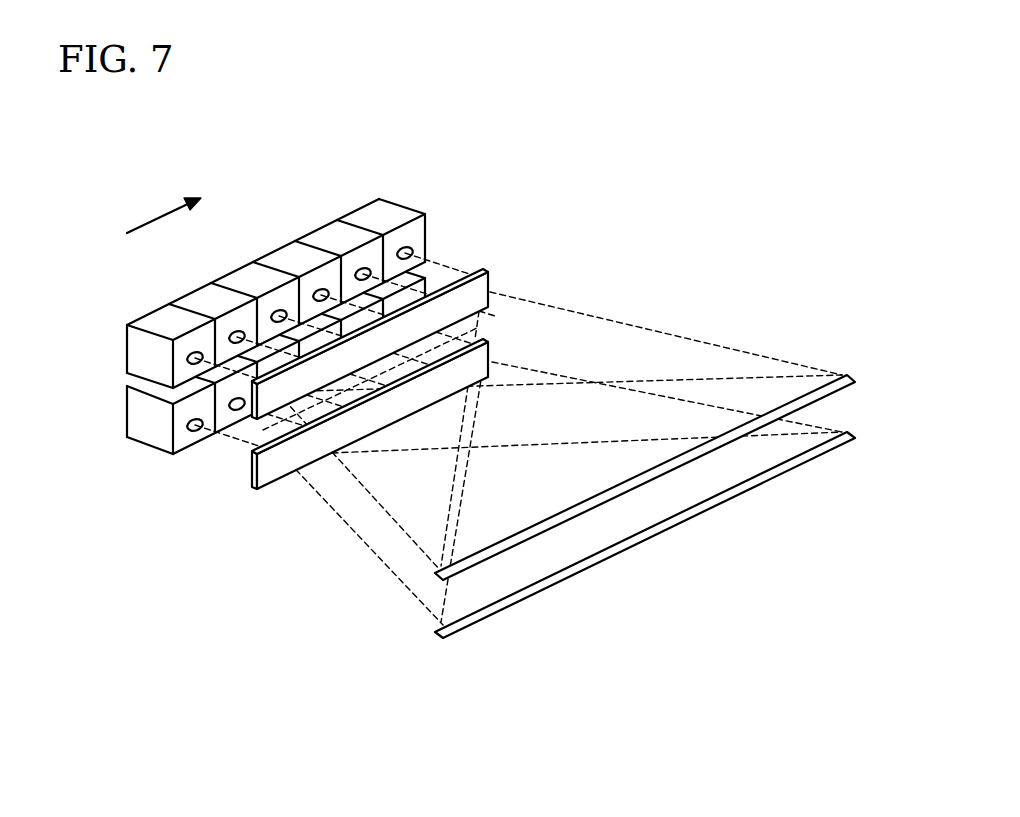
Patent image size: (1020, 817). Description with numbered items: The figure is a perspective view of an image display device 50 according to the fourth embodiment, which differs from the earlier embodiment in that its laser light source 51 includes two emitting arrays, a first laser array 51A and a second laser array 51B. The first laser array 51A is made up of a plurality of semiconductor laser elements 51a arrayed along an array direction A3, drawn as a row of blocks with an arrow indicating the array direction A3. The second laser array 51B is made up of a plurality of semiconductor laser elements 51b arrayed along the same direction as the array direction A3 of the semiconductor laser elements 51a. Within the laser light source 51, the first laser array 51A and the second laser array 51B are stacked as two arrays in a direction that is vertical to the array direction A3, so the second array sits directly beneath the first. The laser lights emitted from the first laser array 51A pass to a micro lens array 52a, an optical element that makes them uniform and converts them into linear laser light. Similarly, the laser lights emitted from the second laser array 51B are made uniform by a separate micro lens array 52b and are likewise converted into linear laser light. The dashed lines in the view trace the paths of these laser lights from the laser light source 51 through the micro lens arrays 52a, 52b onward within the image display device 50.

The image display device 50 is at (718, 216).
The laser light source 51 is at (291, 192).
The first laser array 51A is at (110, 348).
The second laser array 51B is at (108, 418).
The semiconductor laser element 51a is at (165, 323).
The semiconductor laser element 51b is at (148, 435).
The micro lens array 52a is at (485, 268).
The micro lens array 52b is at (490, 347).
The array direction A3 is at (152, 215).